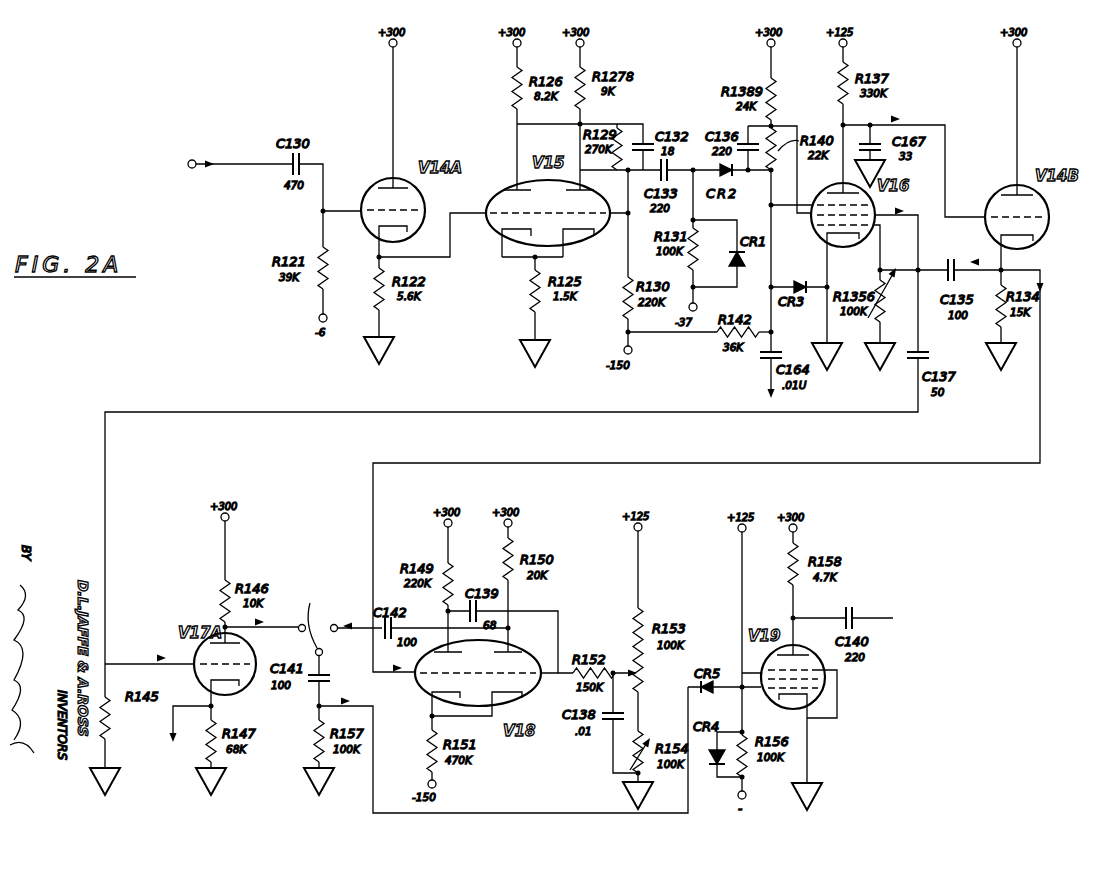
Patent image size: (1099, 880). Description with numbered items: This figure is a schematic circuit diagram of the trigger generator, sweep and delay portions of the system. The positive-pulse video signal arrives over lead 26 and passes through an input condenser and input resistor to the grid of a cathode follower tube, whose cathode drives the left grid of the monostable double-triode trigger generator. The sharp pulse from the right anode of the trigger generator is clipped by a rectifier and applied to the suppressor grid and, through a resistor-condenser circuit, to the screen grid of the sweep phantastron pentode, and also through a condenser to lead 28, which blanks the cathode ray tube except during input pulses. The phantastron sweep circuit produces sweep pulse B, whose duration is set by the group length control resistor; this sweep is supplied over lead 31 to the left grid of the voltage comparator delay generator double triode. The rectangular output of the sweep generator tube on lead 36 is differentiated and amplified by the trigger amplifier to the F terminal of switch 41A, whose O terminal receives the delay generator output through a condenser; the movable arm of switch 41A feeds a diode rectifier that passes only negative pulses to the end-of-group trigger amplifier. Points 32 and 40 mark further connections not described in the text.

The lead 26 is at (237, 167).
The lead 28 is at (768, 371).
The lead 31 is at (1040, 336).
The output lead from V17A cathode 32 is at (173, 723).
The lead 36 is at (918, 250).
The output lead from capacitor C140 40 is at (847, 609).
The switch 41A is at (283, 623).